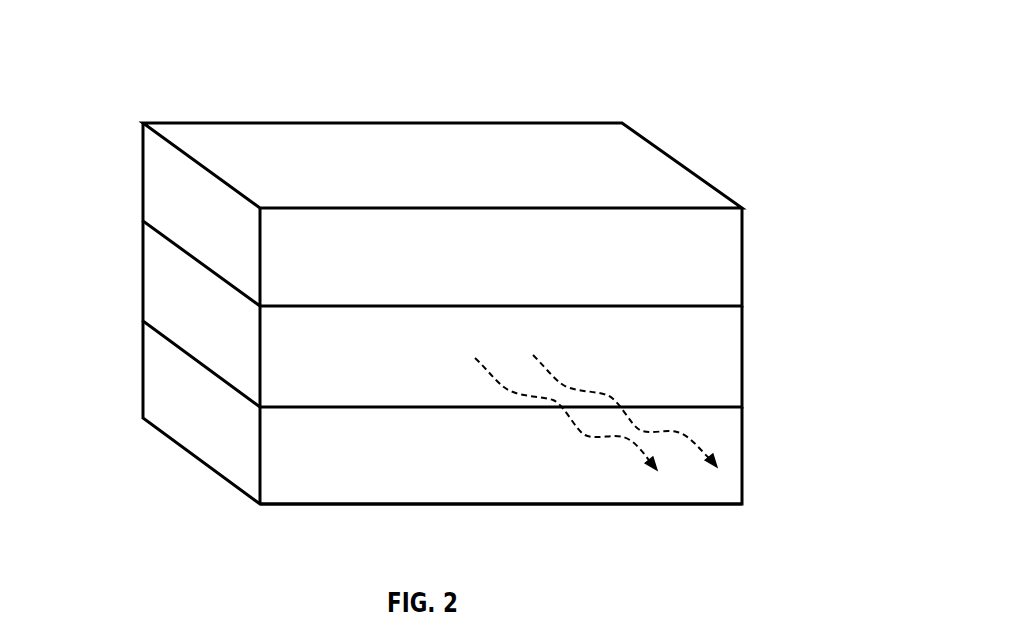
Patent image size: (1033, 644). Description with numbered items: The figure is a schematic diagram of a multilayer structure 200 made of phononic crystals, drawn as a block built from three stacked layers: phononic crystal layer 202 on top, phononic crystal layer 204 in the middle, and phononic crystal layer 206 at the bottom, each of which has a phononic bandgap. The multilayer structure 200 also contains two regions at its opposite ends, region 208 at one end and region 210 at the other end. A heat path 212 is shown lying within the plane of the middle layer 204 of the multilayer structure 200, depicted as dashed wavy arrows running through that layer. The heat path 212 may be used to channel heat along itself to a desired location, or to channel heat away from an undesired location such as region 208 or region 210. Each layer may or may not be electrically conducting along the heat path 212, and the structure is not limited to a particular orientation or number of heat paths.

The multilayer structure 200 is at (211, 84).
The phononic crystal layer 202 is at (160, 169).
The phononic crystal layer 204 is at (160, 272).
The phononic crystal layer 206 is at (160, 402).
The region 208 is at (652, 170).
The region 210 is at (365, 505).
The heat path 212 is at (543, 360).